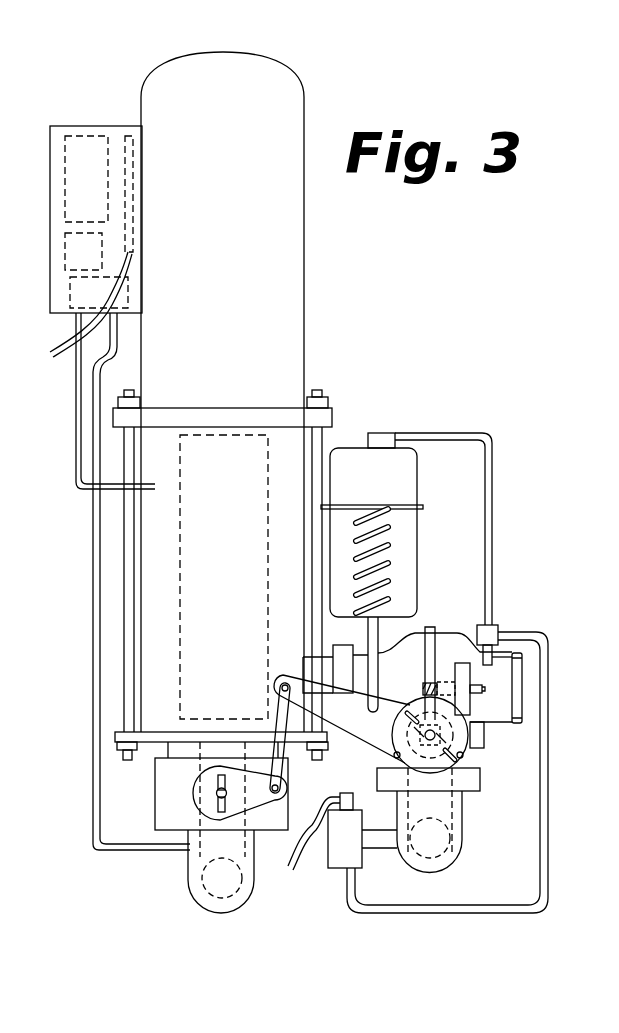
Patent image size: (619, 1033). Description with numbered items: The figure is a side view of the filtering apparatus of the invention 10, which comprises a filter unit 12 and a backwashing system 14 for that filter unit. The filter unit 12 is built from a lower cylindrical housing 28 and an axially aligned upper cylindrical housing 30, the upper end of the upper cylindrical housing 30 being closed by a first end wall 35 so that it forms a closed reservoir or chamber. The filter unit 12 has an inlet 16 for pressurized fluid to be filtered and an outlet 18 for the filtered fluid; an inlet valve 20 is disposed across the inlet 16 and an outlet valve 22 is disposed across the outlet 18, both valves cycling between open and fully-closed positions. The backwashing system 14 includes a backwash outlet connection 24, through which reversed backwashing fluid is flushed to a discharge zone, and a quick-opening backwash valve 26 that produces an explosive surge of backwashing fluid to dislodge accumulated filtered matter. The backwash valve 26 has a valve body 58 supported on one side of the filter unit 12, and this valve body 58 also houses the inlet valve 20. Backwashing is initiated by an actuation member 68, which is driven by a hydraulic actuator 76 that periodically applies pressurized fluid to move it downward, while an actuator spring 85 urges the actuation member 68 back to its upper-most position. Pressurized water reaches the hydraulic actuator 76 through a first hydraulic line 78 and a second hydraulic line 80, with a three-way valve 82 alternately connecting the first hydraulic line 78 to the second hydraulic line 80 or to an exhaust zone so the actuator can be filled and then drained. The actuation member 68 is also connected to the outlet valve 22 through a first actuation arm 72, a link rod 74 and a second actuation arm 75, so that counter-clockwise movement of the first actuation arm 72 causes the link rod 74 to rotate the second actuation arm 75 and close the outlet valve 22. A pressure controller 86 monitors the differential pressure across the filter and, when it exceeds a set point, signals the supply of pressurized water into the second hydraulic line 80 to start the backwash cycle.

The invention 10 is at (432, 380).
The filter unit 12 is at (312, 333).
The backwashing system 14 is at (436, 543).
The inlet 16 is at (430, 847).
The outlet 18 is at (223, 887).
The inlet valve 20 is at (432, 771).
The outlet valve 22 is at (217, 778).
The backwash outlet connection 24 is at (522, 682).
The backwash valve 26 is at (458, 633).
The lower cylindrical housing 28 is at (285, 460).
The upper cylindrical housing 30 is at (305, 270).
The first end wall 35 is at (268, 60).
The valve body 58 is at (493, 720).
The actuation member 68 is at (378, 627).
The first actuation arm 72 is at (358, 730).
The link rod 74 is at (280, 713).
The second actuation arm 75 is at (257, 798).
The hydraulic actuator 76 is at (425, 467).
The first hydraulic line 78 is at (495, 515).
The second hydraulic line 80 is at (548, 713).
The three-way valve 82 is at (490, 630).
The actuator spring 85 is at (388, 563).
The pressure controller 86 is at (46, 254).